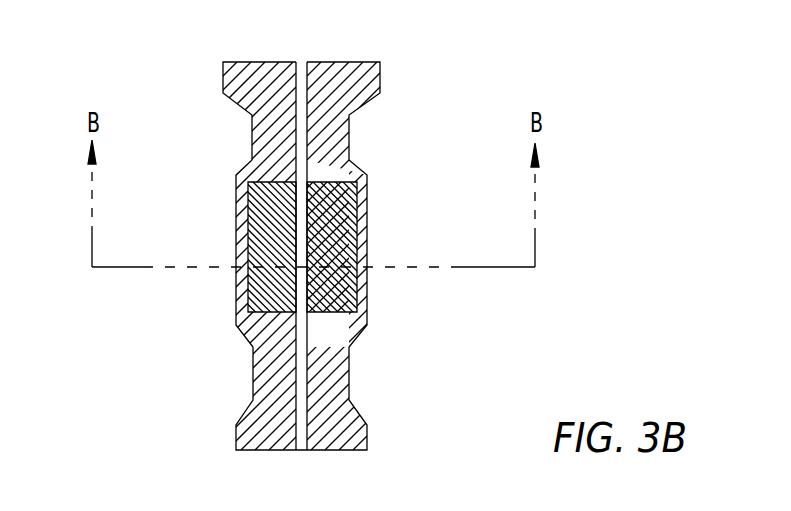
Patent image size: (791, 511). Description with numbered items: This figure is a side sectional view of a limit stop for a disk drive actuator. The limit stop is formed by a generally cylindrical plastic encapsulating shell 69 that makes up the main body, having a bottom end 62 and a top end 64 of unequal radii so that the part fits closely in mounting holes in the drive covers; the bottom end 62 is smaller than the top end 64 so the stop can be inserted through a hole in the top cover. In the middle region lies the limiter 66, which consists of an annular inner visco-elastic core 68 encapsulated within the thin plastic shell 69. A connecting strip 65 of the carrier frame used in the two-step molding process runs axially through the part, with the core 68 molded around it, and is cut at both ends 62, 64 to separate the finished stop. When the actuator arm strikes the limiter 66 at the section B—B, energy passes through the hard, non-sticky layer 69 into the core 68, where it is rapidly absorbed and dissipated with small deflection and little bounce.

The bottom end 62 is at (367, 436).
The top end 64 is at (381, 71).
The connecting strip 65 is at (300, 62).
The limiter 66 is at (384, 256).
The visco-elastic core 68 is at (380, 159).
The encapsulating shell 69 is at (367, 297).